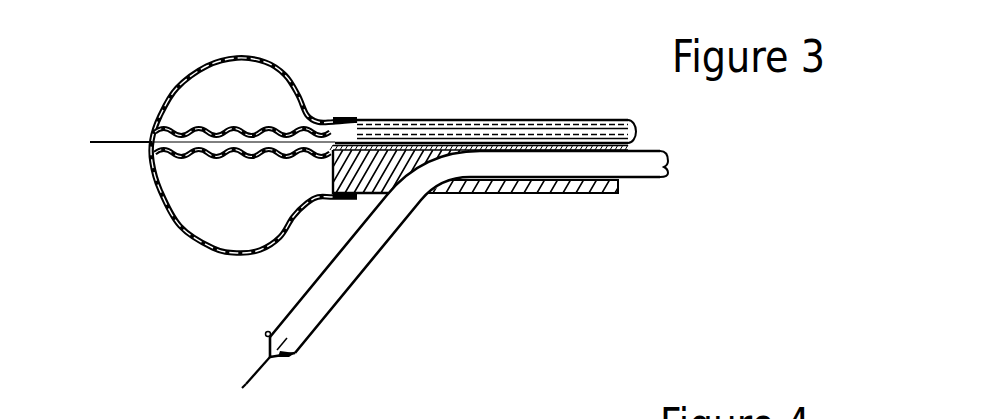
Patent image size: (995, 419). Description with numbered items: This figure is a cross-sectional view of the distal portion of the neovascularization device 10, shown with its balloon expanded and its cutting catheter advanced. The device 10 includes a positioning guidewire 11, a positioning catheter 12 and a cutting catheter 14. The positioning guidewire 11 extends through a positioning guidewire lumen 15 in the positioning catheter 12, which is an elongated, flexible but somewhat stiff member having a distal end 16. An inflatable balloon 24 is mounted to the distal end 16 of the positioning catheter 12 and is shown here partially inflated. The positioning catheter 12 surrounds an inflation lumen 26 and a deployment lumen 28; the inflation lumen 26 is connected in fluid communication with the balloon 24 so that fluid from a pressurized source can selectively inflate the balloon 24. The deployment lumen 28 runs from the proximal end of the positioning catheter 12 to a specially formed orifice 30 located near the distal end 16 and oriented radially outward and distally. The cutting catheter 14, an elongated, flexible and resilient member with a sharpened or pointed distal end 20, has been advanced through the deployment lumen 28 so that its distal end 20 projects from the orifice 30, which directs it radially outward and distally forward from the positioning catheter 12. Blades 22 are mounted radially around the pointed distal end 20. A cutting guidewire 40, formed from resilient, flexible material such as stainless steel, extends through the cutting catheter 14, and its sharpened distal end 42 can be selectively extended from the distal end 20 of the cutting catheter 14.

The device 10 is at (416, 64).
The positioning guidewire 11 is at (123, 145).
The positioning catheter 12 is at (463, 120).
The cutting catheter 14 is at (362, 260).
The positioning guidewire lumen 15 is at (277, 105).
The distal end 16 is at (520, 120).
The distal end 20 is at (317, 317).
The blades 22 is at (267, 337).
The inflatable balloon 24 is at (190, 243).
The inflation lumen 26 is at (573, 120).
The deployment lumen 28 is at (583, 183).
The orifice 30 is at (434, 207).
The cutting guidewire 40 is at (255, 373).
The distal end 42 is at (242, 387).